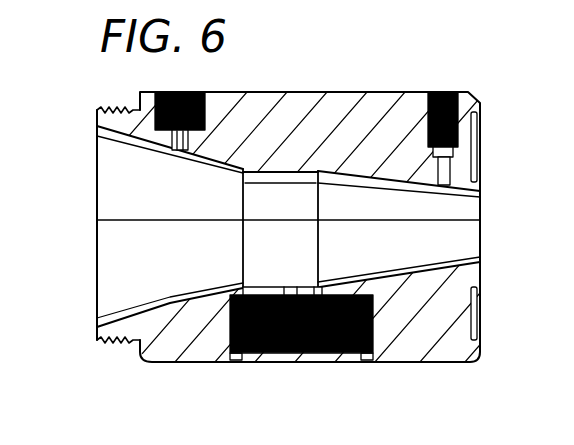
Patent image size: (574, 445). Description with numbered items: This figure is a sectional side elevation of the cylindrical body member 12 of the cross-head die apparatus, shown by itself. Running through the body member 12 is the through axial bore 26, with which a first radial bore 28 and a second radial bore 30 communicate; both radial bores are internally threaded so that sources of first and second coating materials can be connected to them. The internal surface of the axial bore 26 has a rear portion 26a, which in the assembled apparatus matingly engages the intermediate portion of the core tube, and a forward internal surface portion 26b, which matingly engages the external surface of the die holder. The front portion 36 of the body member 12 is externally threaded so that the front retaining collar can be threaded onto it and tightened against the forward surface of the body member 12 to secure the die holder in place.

The cylindrical body member 12 is at (384, 100).
The axial bore 26 is at (245, 226).
The rear portion of the internal surface of bore 26a is at (400, 253).
The internal surface portion of the axial bore 26b is at (175, 207).
The first radial bore 28 is at (282, 362).
The second radial bore 30 is at (210, 94).
The front portion of body member 36 is at (97, 327).